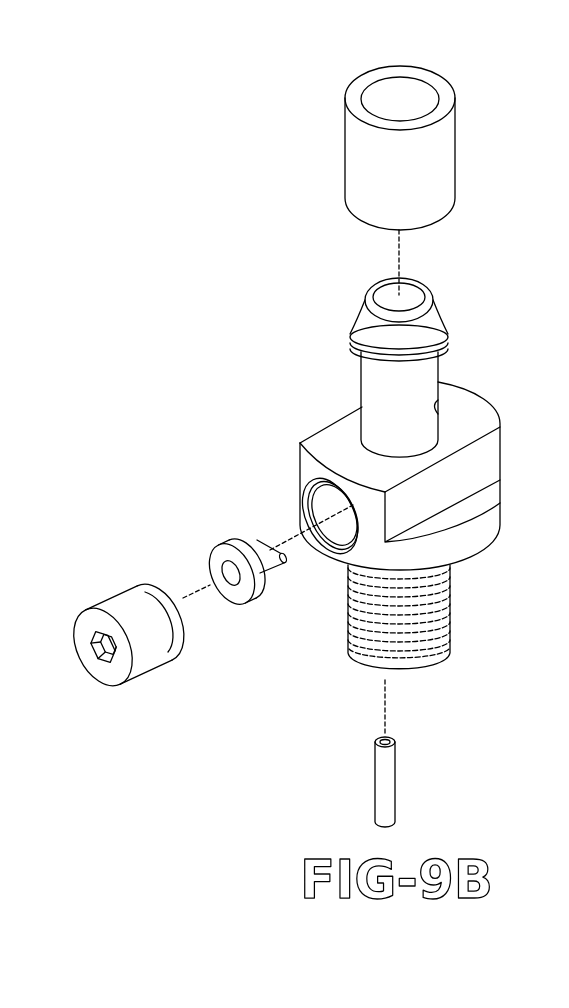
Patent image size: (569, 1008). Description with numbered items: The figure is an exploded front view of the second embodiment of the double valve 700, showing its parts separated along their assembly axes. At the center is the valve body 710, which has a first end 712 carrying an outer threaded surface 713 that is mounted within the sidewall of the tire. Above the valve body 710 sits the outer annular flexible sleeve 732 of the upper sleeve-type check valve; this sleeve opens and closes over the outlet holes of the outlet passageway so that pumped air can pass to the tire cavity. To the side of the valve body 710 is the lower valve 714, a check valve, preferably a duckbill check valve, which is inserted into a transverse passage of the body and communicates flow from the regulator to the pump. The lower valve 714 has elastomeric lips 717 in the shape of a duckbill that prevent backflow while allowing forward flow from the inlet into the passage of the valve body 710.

The double valve 700 is at (205, 150).
The valve body 710 is at (330, 445).
The first end 712 is at (417, 678).
The outer threaded surface 713 is at (427, 625).
The lower valve 714 is at (309, 588).
The elastomeric lips 717 is at (255, 543).
The outer annular flexible sleeve 732 is at (452, 158).